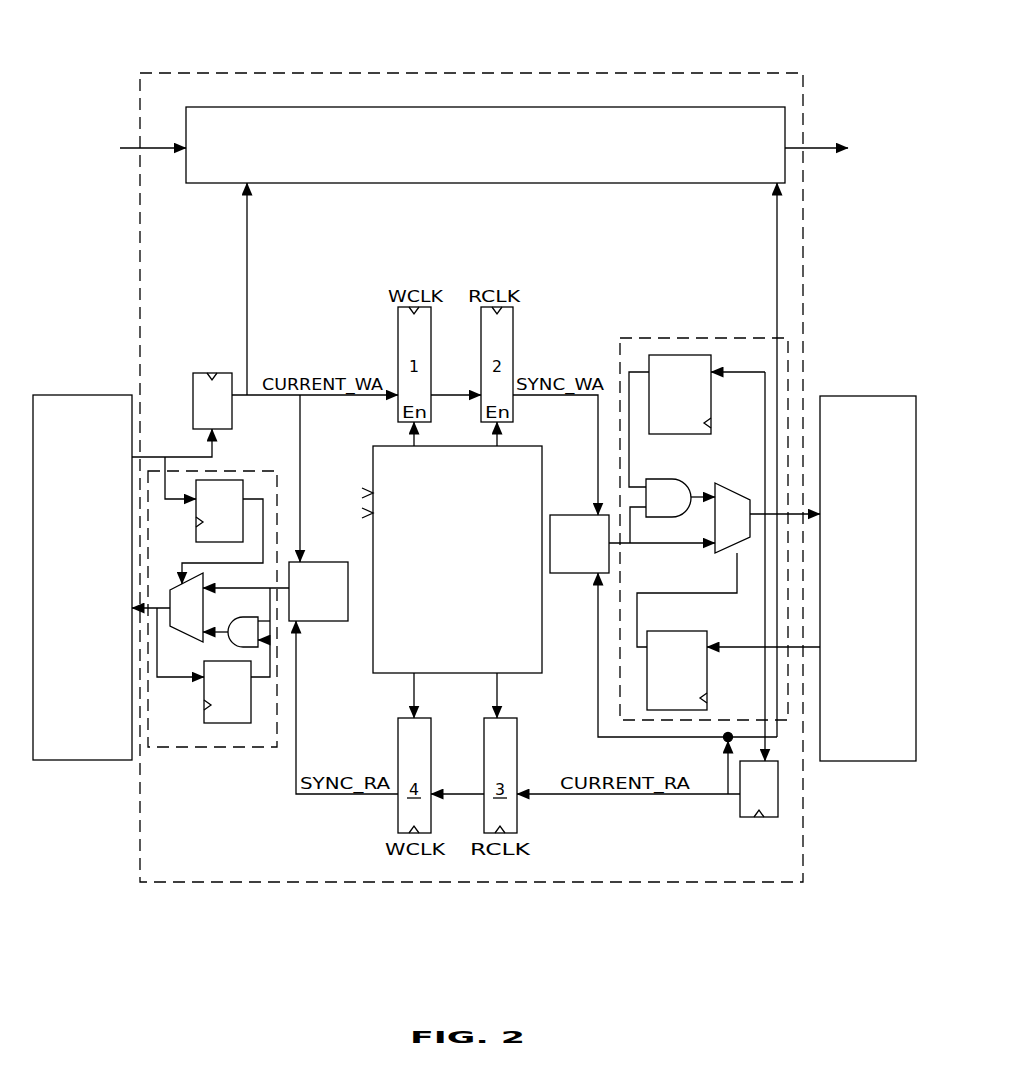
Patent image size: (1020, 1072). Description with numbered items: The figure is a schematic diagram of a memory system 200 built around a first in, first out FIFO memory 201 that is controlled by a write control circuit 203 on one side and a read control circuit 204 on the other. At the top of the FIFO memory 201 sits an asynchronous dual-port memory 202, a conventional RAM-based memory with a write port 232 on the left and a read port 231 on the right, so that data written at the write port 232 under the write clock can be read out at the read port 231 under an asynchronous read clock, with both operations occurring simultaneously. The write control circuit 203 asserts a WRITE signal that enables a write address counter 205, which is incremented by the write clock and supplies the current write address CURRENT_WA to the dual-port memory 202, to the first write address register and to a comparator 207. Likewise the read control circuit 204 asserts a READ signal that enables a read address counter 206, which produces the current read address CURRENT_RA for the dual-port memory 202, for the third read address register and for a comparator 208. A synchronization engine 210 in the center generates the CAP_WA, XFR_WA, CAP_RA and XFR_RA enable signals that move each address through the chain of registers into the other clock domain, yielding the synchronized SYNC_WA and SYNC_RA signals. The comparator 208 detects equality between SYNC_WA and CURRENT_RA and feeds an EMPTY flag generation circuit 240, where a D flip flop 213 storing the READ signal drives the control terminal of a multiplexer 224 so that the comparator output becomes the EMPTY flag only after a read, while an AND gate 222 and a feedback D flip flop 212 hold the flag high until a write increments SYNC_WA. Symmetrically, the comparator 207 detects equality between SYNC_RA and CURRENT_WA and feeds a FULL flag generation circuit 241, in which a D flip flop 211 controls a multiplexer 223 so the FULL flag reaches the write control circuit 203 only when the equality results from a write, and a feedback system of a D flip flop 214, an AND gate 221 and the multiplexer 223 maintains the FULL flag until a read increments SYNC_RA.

The memory system 200 is at (205, 42).
The FIFO memory 201 is at (648, 882).
The asynchronous dual-port memory 202 is at (485, 145).
The write control circuit 203 is at (82, 577).
The read control circuit 204 is at (868, 578).
The write address counter 205 is at (211, 391).
The read address counter 206 is at (761, 800).
The comparator 207 is at (318, 591).
The comparator 208 is at (579, 544).
The synchronization engine 210 is at (432, 559).
The D flip flop 211 is at (219, 511).
The D flip flop 212 is at (708, 394).
The D flip flop 213 is at (706, 670).
The D flip flop 214 is at (201, 692).
The AND gate 221 is at (249, 632).
The AND gate 222 is at (668, 498).
The multiplexer 223 is at (186, 608).
The multiplexer 224 is at (732, 518).
The read port 231 is at (847, 147).
The write port 232 is at (121, 147).
The EMPTY flag generation circuit 240 is at (740, 338).
The FULL flag generation circuit 241 is at (195, 747).